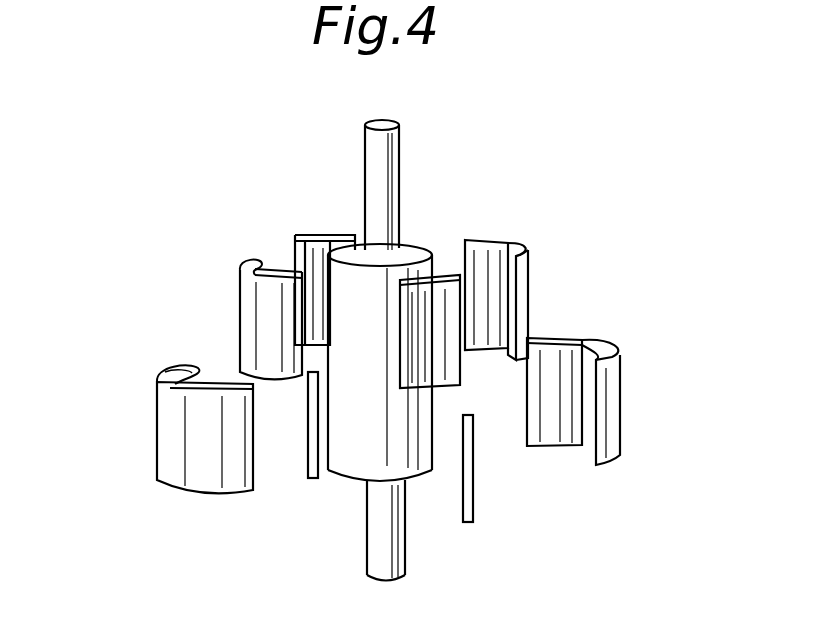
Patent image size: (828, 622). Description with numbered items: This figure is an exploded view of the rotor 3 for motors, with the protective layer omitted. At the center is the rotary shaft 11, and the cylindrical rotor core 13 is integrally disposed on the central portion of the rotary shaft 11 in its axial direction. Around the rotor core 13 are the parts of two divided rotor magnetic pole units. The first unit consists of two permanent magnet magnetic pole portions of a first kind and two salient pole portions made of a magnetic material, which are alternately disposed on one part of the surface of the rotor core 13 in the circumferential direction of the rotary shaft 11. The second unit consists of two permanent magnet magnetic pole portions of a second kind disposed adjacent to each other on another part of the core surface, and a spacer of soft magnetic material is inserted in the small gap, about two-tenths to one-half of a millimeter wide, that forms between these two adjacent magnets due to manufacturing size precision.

The rotor for motors 3 is at (262, 228).
The rotary shaft 11 is at (388, 142).
The rotor core 13 is at (420, 250).